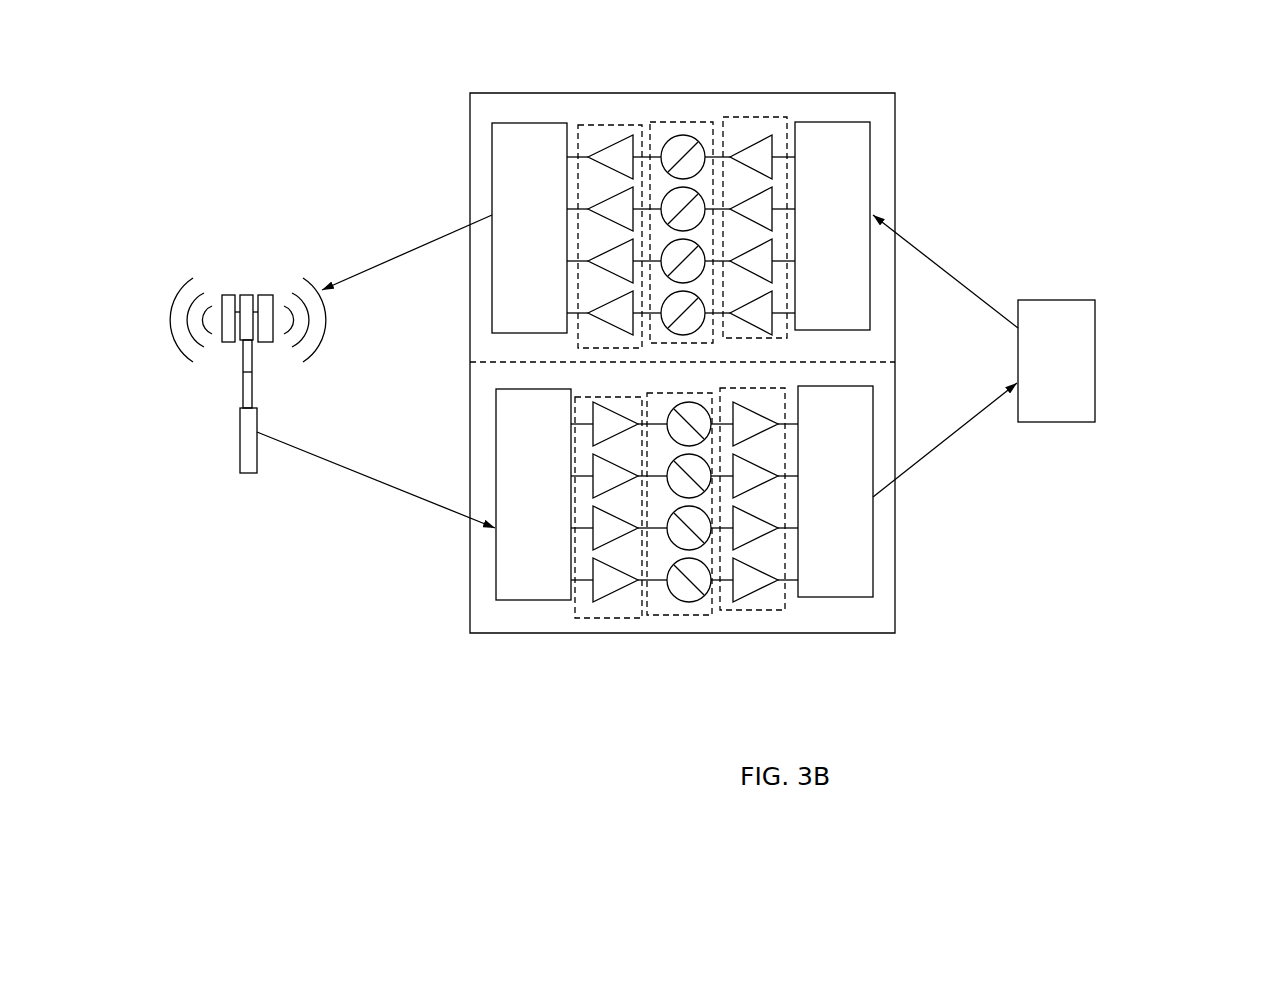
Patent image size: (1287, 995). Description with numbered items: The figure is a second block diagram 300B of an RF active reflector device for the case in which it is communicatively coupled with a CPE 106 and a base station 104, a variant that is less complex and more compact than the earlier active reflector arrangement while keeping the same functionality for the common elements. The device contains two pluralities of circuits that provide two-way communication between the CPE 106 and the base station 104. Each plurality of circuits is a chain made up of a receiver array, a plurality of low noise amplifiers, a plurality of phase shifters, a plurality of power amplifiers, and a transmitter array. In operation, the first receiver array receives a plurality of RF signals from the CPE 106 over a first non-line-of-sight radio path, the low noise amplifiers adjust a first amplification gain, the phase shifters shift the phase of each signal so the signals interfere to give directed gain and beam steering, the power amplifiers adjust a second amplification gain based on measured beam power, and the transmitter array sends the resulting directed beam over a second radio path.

The base station 104 is at (238, 440).
The CPE 106 is at (1035, 298).
The second block diagram 300B is at (1225, 692).